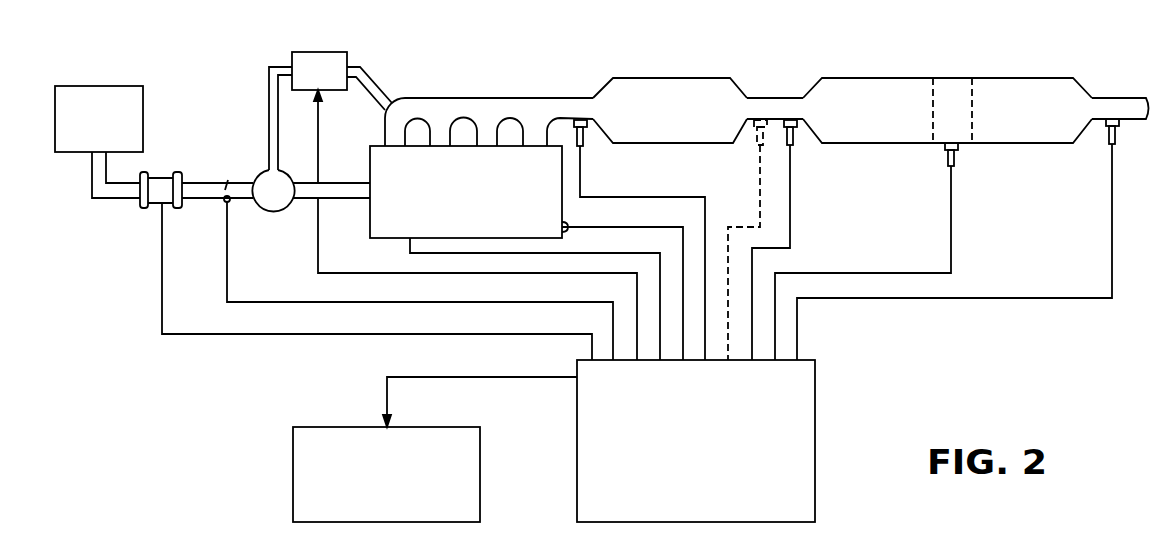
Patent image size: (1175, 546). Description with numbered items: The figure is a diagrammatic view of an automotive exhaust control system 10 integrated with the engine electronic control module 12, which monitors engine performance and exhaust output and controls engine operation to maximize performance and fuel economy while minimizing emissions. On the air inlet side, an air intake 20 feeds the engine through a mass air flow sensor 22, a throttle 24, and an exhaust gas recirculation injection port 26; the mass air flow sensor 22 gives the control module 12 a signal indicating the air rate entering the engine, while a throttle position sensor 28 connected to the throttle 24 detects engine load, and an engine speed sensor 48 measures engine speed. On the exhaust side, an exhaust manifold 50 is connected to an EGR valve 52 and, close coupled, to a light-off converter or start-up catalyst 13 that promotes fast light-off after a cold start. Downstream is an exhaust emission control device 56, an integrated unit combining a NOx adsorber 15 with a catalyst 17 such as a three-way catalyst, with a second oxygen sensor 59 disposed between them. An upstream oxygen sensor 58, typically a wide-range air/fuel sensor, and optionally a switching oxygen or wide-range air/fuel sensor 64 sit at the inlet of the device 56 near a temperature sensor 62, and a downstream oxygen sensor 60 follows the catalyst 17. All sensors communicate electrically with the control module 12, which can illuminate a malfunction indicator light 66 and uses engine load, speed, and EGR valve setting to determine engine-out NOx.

The exhaust control system 10 is at (692, 33).
The electronic control module 12 is at (689, 451).
The start-up catalyst 13 is at (662, 78).
The NOx adsorber 15 is at (870, 78).
The catalyst 17 is at (1025, 78).
The air intake 20 is at (78, 86).
The mass air flow sensor 22 is at (146, 210).
The throttle 24 is at (228, 183).
The exhaust gas recirculation injection port 26 is at (272, 168).
The throttle position sensor 28 is at (225, 204).
The engine speed sensor 48 is at (566, 227).
The exhaust manifold 50 is at (483, 98).
The EGR valve 52 is at (313, 52).
The exhaust emission control device 56 is at (950, 78).
The upstream oxygen sensor 58 is at (588, 135).
The second oxygen sensor 59 is at (956, 160).
The downstream oxygen sensor 60 is at (1119, 135).
The temperature sensor 62 is at (797, 135).
The switching O2 or wide-range air/fuel sensor 64 is at (752, 137).
The malfunction indicator light 66 is at (310, 427).